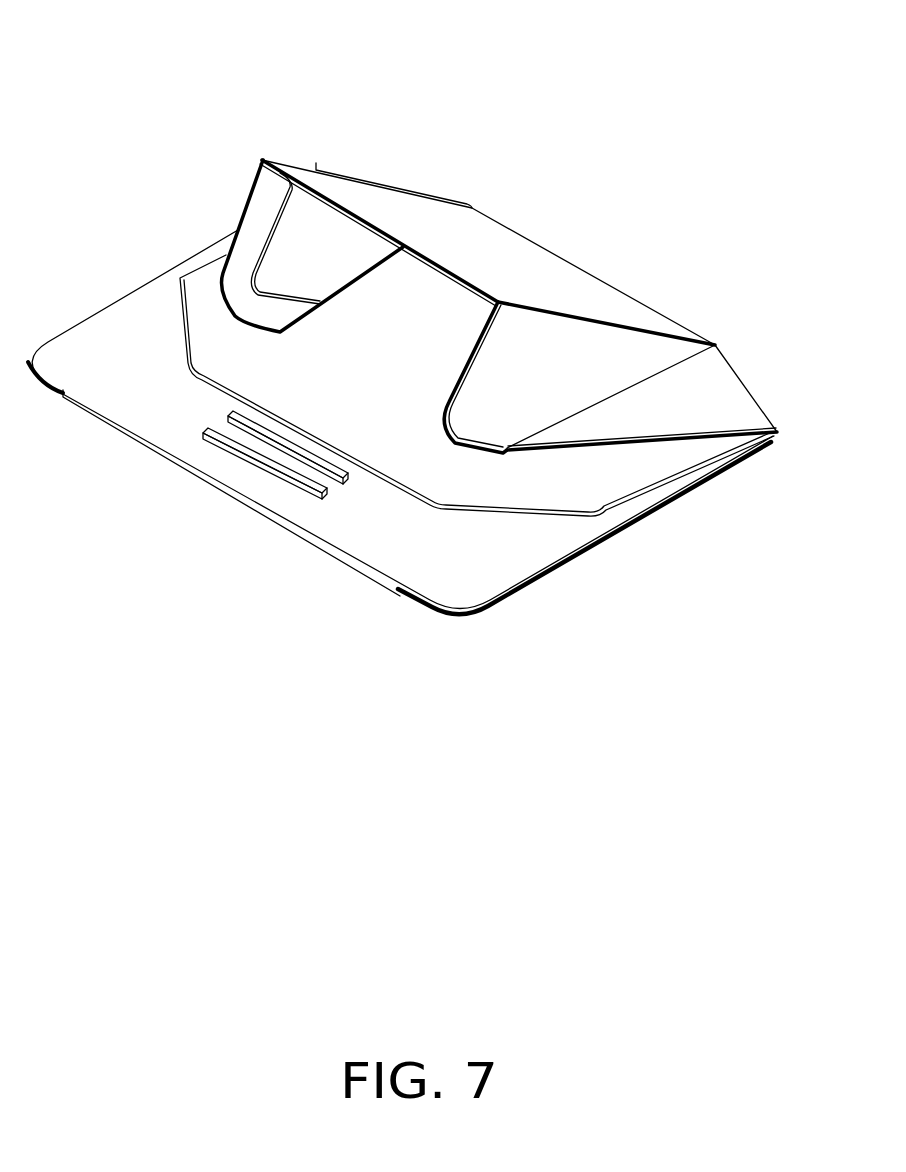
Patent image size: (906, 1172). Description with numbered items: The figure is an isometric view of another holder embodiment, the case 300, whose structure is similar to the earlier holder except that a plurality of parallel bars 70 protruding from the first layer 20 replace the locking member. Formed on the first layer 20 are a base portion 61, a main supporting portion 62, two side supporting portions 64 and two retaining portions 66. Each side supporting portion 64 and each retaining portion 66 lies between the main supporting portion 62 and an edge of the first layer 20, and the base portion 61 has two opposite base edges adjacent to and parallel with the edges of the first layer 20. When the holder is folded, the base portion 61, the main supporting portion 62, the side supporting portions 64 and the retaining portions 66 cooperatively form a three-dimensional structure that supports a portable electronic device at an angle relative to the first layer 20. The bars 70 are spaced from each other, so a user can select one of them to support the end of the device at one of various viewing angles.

The case 300 is at (172, 71).
The first layer 20 is at (372, 532).
The base portion 61 is at (563, 486).
The main supporting portion 62 is at (502, 268).
The side supporting portions 64 is at (303, 243).
The retaining portions 66 is at (698, 387).
The parallel bars 70 is at (247, 450).